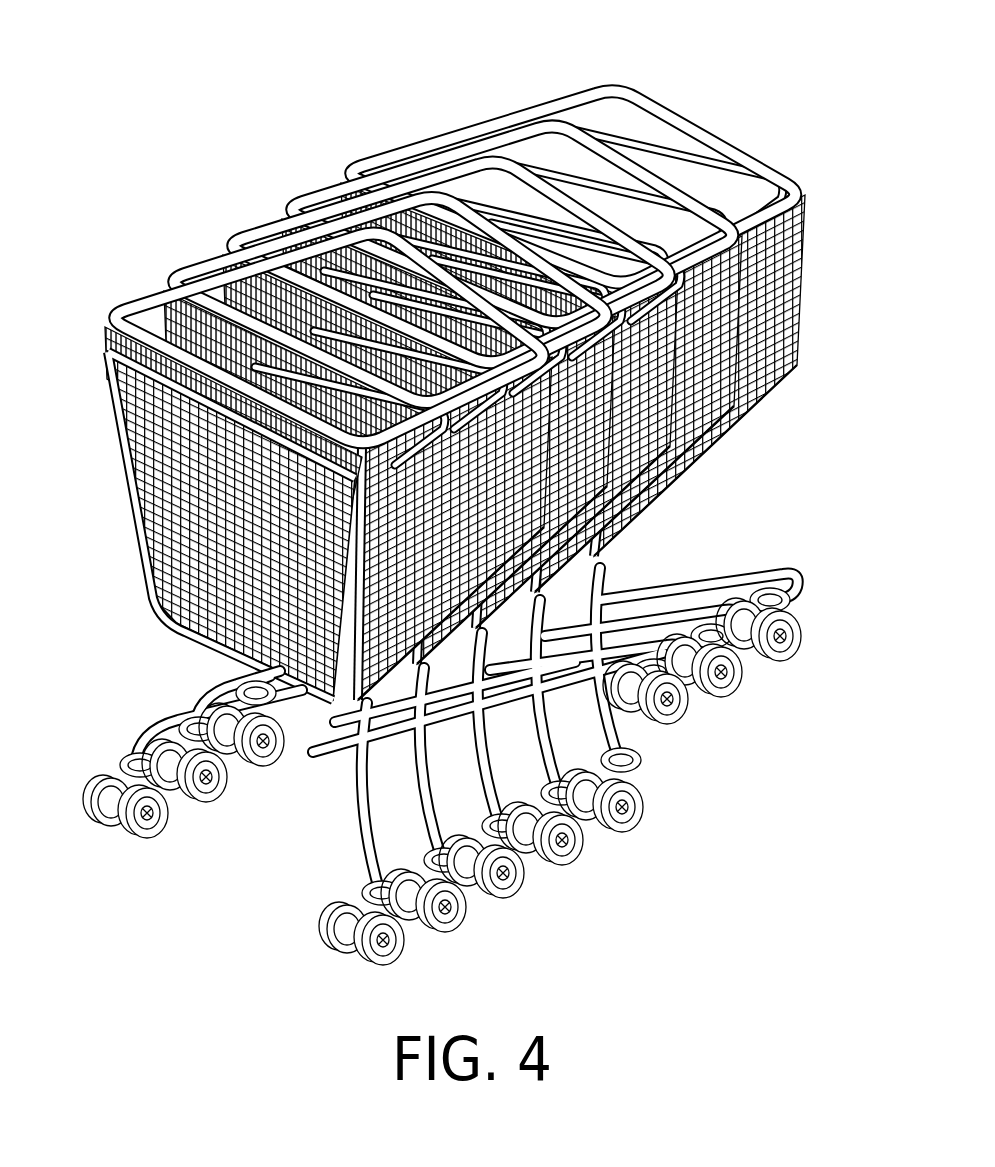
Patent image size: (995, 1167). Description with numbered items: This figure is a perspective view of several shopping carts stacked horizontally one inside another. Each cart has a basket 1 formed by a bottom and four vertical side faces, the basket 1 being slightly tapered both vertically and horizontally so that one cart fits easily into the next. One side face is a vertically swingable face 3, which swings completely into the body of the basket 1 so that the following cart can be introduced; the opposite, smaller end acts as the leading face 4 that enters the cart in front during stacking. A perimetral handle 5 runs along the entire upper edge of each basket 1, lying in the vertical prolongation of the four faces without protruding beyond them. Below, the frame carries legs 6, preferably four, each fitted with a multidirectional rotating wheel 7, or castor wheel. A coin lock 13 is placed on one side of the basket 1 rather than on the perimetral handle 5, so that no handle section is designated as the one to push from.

The basket 1 is at (243, 293).
The swingable face 3 is at (127, 523).
The leading face 4 is at (590, 250).
The perimetral handle 5 is at (437, 142).
The legs 6 is at (720, 583).
The multidirectional rotating wheel 7 is at (383, 897).
The coin lock 13 is at (683, 483).